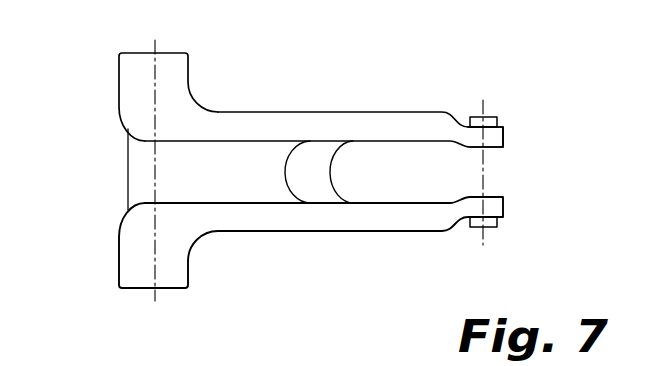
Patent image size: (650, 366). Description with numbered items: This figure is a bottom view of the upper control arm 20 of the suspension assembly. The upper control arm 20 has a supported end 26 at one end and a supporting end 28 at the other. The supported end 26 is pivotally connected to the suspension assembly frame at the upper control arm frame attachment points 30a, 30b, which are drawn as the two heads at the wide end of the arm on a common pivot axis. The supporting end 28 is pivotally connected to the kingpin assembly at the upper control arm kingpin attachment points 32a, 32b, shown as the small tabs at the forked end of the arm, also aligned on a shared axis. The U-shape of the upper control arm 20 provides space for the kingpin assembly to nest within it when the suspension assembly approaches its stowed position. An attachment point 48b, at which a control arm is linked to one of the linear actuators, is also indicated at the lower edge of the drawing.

The upper control arm 20 is at (356, 112).
The supported end 26 is at (127, 172).
The supporting end 28 is at (505, 136).
The upper control arm frame attachment point 30a is at (155, 288).
The upper control arm frame attachment point 30b is at (155, 53).
The upper control arm kingpin attachment point 32a is at (488, 229).
The upper control arm kingpin attachment point 32b is at (488, 116).
The attachment point 48b is at (318, 365).